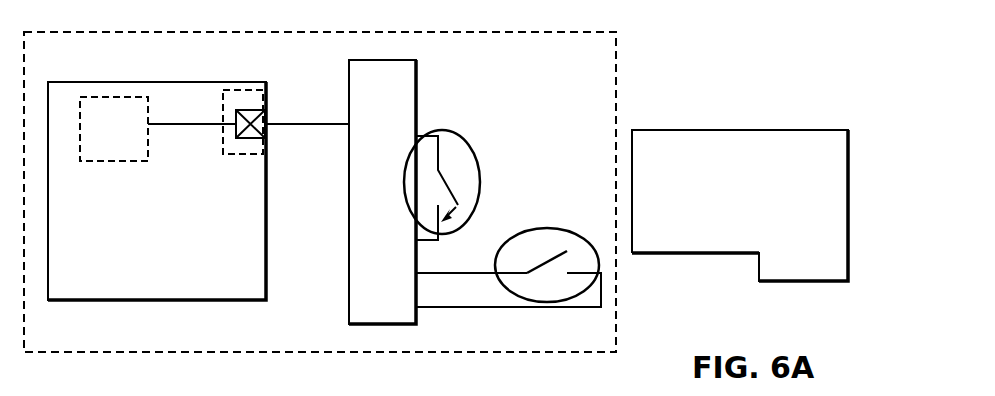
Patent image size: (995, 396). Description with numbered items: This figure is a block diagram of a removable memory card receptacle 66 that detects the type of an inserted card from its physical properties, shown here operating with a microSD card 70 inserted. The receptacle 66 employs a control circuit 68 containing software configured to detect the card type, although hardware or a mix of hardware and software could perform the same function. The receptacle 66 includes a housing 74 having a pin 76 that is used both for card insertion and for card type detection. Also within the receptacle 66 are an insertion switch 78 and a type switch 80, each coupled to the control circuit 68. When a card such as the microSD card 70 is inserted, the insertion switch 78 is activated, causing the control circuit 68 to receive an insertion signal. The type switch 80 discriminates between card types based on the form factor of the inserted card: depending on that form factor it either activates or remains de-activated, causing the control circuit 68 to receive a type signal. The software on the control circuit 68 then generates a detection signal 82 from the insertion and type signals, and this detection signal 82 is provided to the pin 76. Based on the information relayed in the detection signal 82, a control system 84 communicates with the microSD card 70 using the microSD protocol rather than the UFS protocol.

The removable memory card receptacle 66 is at (617, 33).
The control circuit 68 is at (417, 72).
The microSD card 70 is at (740, 130).
The housing 74 is at (230, 155).
The pin 76 is at (234, 118).
The insertion switch 78 is at (440, 150).
The type switch 80 is at (527, 273).
The detection signal 82 is at (304, 150).
The control system 84 is at (114, 162).